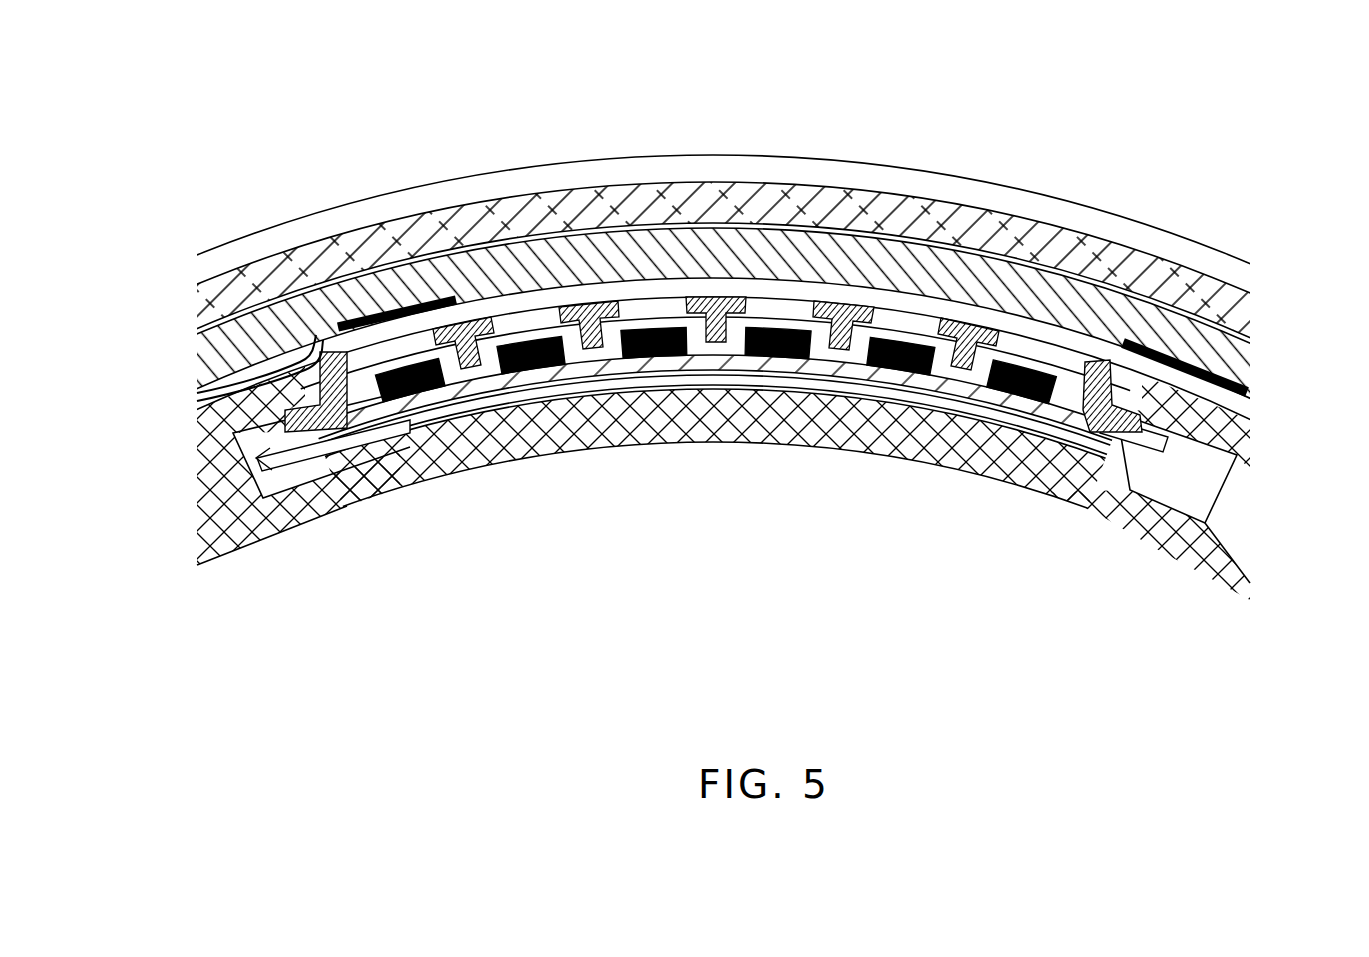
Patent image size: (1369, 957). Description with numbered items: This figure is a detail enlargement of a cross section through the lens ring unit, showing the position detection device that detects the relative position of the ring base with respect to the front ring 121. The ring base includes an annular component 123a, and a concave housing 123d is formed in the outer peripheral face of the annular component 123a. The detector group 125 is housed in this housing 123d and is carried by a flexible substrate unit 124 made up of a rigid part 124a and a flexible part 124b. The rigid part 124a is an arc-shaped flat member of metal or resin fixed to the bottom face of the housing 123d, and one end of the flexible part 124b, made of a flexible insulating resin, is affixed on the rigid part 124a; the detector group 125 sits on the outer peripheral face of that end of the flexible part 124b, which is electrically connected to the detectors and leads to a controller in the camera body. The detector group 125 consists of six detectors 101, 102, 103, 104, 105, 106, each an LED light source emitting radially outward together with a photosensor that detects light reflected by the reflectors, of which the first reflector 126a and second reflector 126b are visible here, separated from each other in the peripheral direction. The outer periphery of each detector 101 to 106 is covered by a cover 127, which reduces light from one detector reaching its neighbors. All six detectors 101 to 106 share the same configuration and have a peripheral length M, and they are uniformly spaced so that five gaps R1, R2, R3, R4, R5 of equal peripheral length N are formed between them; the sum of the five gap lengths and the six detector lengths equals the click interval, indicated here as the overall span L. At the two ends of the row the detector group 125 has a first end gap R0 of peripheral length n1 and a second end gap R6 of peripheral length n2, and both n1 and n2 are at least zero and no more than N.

The detector 101 is at (420, 392).
The detector 102 is at (532, 366).
The detector 103 is at (655, 356).
The detector 104 is at (780, 360).
The detector 105 is at (902, 376).
The detector 106 is at (1025, 404).
The front ring 121 is at (1222, 340).
The annular component 123a is at (1228, 562).
The housing 123d is at (1190, 463).
The flexible substrate unit 124 is at (266, 600).
The rigid part 124a is at (300, 522).
The flexible part 124b is at (235, 540).
The detector group 125 is at (684, 627).
The first reflector 126a is at (236, 397).
The second reflector 126b is at (1248, 385).
The cover 127 is at (1125, 432).
The first end gap R0 is at (372, 398).
The gap R1 is at (471, 371).
The gap R2 is at (593, 352).
The gap R3 is at (716, 346).
The gap R4 is at (839, 353).
The gap R5 is at (961, 372).
The second end gap R6 is at (1044, 500).
The overall length L is at (305, 133).
The length of detector in peripheral direction M is at (440, 350).
The length of gap in peripheral direction N is at (495, 350).
The length of first end gap n1 is at (360, 405).
The length of second end gap n2 is at (1058, 410).